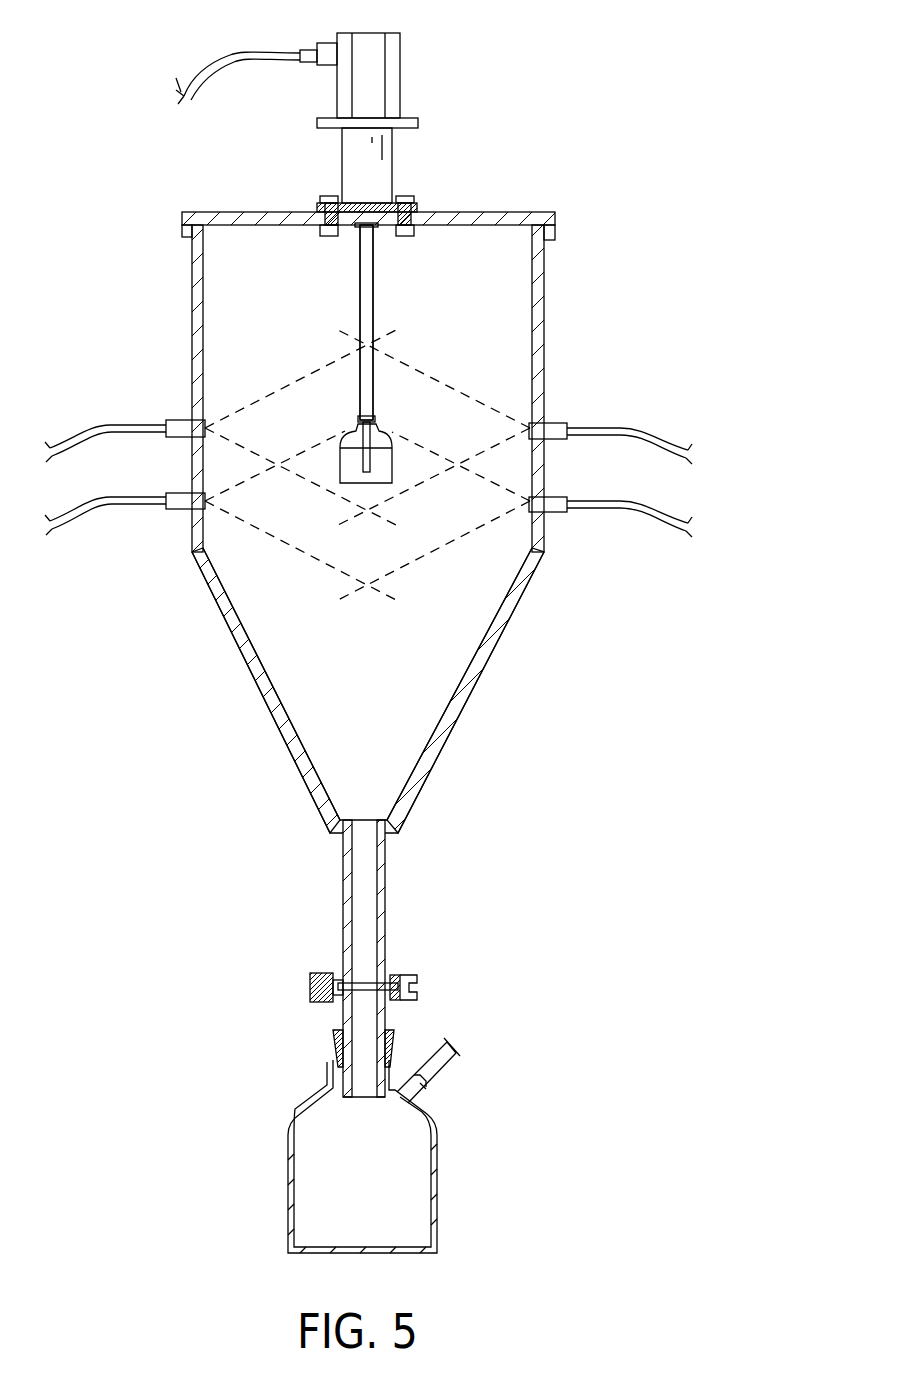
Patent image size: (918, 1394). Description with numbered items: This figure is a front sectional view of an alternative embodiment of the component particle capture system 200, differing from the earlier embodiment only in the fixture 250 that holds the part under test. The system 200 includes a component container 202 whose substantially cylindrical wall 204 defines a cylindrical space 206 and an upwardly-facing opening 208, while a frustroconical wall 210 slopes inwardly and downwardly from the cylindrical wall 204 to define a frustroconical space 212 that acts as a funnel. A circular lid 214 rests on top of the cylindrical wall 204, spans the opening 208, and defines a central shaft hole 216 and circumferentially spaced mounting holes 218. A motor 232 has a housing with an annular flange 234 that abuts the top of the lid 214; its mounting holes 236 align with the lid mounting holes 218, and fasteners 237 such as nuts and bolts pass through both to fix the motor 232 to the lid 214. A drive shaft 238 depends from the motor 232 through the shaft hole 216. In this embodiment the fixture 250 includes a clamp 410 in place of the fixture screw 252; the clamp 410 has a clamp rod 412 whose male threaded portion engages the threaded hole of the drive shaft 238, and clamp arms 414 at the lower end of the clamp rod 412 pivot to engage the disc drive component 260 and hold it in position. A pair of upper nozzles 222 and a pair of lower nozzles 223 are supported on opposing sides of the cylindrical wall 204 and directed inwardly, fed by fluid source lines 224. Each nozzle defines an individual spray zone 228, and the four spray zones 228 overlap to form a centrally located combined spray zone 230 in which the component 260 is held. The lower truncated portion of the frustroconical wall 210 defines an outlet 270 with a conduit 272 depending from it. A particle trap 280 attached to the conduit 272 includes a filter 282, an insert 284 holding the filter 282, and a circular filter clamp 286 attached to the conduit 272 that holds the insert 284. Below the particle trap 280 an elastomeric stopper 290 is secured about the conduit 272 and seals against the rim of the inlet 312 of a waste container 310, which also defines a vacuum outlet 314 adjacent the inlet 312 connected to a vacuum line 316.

The system 200 is at (660, 128).
The component container 202 is at (584, 277).
The cylindrical wall 204 is at (541, 356).
The cylindrical space 206 is at (260, 296).
The upwardly-facing opening 208 is at (486, 240).
The frustroconical wall 210 is at (538, 581).
The frustroconical space 212 is at (292, 648).
The lid 214 is at (190, 221).
The shaft hole 216 is at (357, 230).
The mounting holes 218 is at (312, 235).
The upper nozzles 222 is at (178, 420).
The lower nozzles 223 is at (183, 493).
The fluid source lines 224 is at (102, 438).
The spray zone 228 is at (238, 434).
The combined spray zone 230 is at (367, 552).
The motor 232 is at (395, 80).
The annular flange 234 is at (318, 208).
The mounting holes 236 is at (314, 195).
The fasteners 237 is at (322, 195).
The drive shaft 238 is at (370, 250).
The fixture 250 is at (334, 348).
The fixture screw 252 is at (374, 336).
The disc drive component 260 is at (385, 458).
The outlet 270 is at (367, 790).
The conduit 272 is at (388, 903).
The particle trap 280 is at (474, 980).
The filter 282 is at (345, 978).
The insert 284 is at (398, 982).
The filter clamp 286 is at (310, 985).
The elastomeric stopper 290 is at (333, 1045).
The waste container 310 is at (236, 1160).
The inlet 312 is at (337, 1106).
The vacuum outlet 314 is at (400, 1106).
The vacuum line 316 is at (445, 1056).
The clamp 410 is at (368, 433).
The clamp rod 412 is at (375, 406).
The clamp arms 414 is at (352, 428).